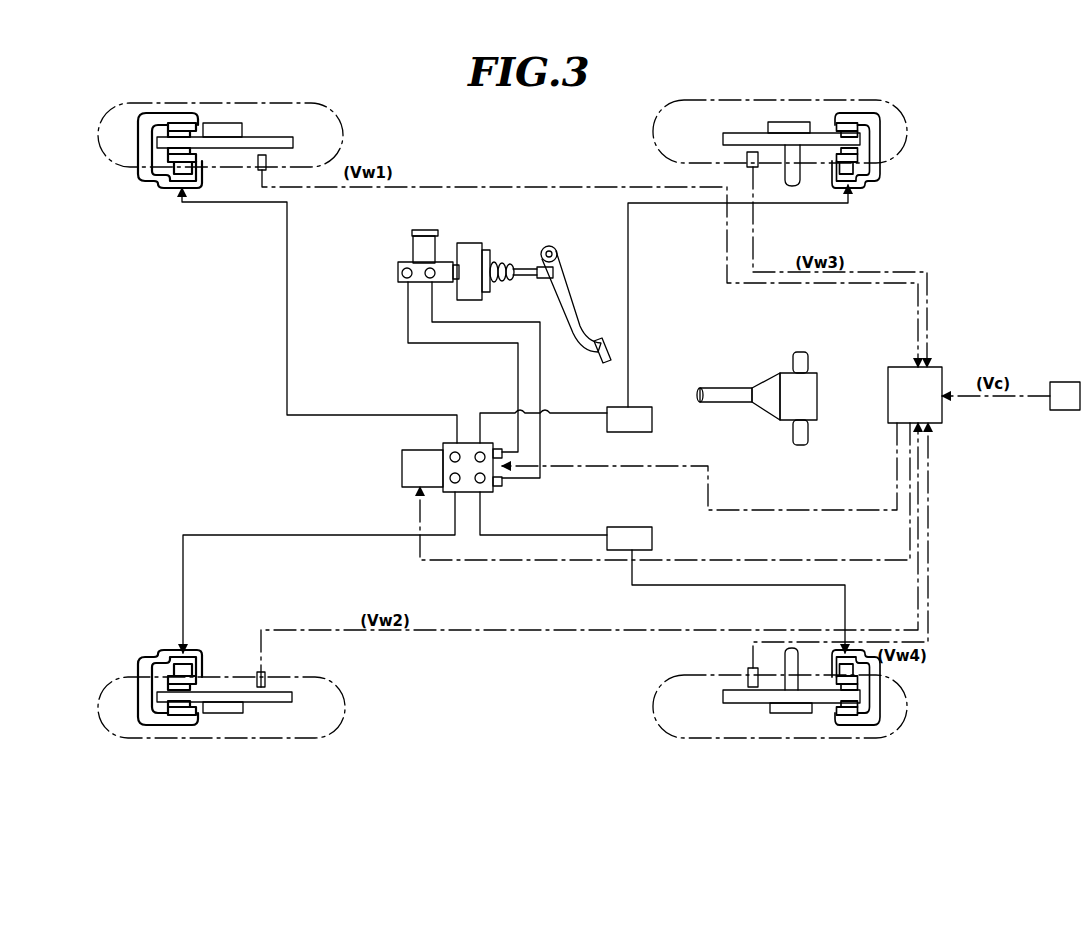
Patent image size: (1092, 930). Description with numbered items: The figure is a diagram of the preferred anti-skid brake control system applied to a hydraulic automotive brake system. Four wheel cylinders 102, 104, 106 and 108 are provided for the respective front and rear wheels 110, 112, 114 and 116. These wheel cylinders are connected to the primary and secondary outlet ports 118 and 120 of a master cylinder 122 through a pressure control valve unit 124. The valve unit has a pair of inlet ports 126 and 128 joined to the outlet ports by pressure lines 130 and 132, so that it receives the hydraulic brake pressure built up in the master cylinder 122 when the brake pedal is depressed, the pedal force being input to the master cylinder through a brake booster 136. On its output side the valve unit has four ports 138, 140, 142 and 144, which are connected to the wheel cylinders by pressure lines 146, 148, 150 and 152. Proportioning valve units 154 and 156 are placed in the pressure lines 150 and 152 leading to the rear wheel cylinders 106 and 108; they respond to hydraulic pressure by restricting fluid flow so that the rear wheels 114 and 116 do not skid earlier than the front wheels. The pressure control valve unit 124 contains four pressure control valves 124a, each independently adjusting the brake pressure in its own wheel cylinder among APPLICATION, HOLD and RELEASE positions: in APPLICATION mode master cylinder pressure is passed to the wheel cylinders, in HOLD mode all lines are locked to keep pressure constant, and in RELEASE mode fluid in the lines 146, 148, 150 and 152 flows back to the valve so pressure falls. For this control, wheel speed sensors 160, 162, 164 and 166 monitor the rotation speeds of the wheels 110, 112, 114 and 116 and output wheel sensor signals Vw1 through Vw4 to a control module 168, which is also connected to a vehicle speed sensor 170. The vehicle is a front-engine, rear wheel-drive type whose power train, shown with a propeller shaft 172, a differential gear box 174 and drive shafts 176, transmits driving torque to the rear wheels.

The wheel cylinder 102 is at (182, 180).
The wheel cylinder 104 is at (180, 652).
The wheel cylinder 106 is at (858, 175).
The wheel cylinder 108 is at (858, 668).
The front wheel 110 is at (338, 113).
The wheel 112 is at (270, 740).
The rear wheel 114 is at (904, 111).
The rear wheel 116 is at (797, 742).
The primary outlet port 118 is at (437, 258).
The secondary outlet port 120 is at (398, 279).
The master cylinder 122 is at (398, 266).
The pressure control valve unit 124 is at (463, 443).
The pressure control valve 124a is at (402, 463).
The inlet port 126 is at (503, 482).
The inlet port 128 is at (503, 453).
The pressure line 130 is at (432, 311).
The pressure line 132 is at (408, 322).
The brake booster 136 is at (475, 258).
The port 138 is at (450, 455).
The port 140 is at (450, 482).
The port 142 is at (482, 452).
The port 144 is at (480, 484).
The pressure line 146 is at (287, 405).
The pressure line 148 is at (300, 535).
The pressure line 150 is at (585, 412).
The pressure line 152 is at (570, 535).
The proportioning valve unit 154 is at (645, 405).
The proportioning valve unit 156 is at (635, 527).
The wheel speed sensor 160 is at (266, 161).
The wheel speed sensor 162 is at (259, 672).
The wheel speed sensor 164 is at (752, 152).
The wheel speed sensor 166 is at (748, 678).
The control module 168 is at (944, 420).
The vehicle speed sensor 170 is at (1052, 382).
The propeller shaft 172 is at (722, 388).
The differential gear box 174 is at (777, 372).
The drive shaft 176 is at (806, 355).